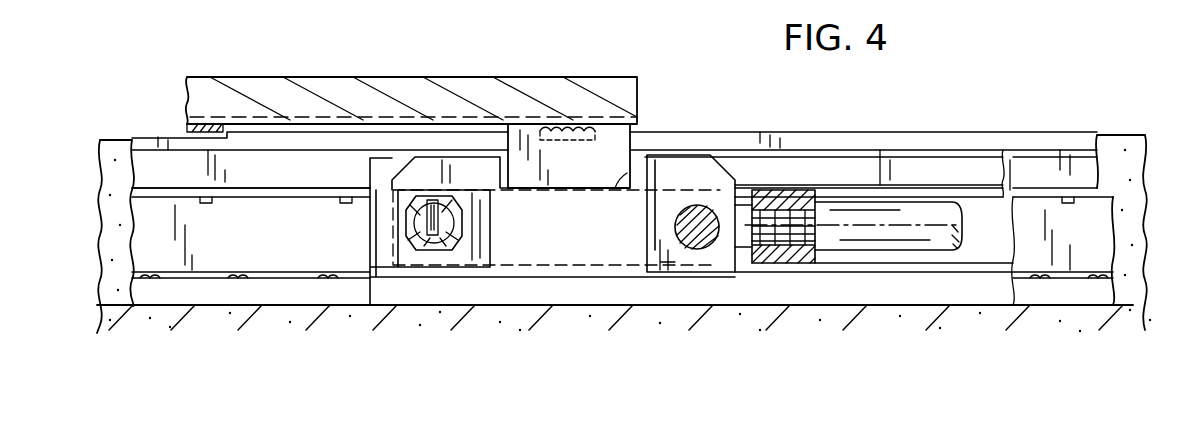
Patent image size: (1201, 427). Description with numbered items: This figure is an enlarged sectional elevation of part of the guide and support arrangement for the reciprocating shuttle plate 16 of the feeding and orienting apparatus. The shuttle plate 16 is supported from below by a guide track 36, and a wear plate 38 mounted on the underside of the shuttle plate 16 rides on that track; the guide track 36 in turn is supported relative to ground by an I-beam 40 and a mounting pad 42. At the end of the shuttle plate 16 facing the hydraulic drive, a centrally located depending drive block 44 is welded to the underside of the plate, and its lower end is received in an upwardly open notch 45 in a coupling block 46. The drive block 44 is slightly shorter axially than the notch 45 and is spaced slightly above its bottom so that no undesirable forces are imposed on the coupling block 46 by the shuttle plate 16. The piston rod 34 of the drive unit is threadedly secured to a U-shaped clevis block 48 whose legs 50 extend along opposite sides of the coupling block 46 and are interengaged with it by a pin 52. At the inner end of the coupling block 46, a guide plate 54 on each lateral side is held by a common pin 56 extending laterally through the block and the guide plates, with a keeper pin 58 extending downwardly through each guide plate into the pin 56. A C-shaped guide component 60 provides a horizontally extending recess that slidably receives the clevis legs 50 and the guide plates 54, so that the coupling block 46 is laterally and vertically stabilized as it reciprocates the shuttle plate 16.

The shuttle plate 16 is at (606, 72).
The piston rod 34 is at (900, 245).
The guide track 36 is at (1073, 135).
The wear plate 38 is at (320, 130).
The I-beam 40 is at (1105, 243).
The mounting pad 42 is at (1093, 292).
The drive block 44 is at (607, 135).
The notch 45 is at (622, 180).
The coupling block 46 is at (540, 250).
The clevis block 48 is at (789, 190).
The leg 50 is at (742, 258).
The pin 52 is at (700, 248).
The guide plate 54 is at (412, 268).
The pin 56 is at (440, 252).
The keeper pin 58 is at (440, 220).
The C-shaped guide component 60 is at (955, 165).